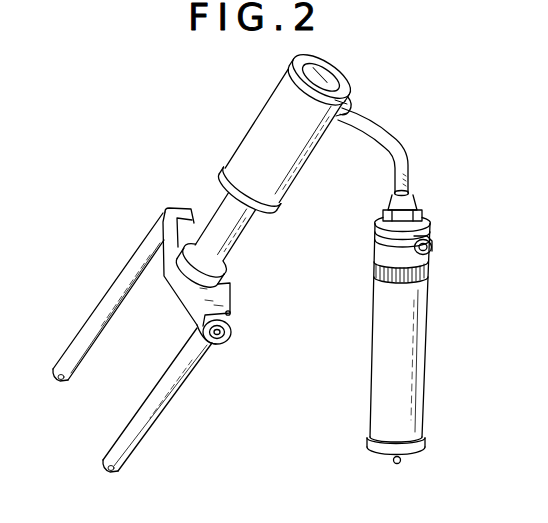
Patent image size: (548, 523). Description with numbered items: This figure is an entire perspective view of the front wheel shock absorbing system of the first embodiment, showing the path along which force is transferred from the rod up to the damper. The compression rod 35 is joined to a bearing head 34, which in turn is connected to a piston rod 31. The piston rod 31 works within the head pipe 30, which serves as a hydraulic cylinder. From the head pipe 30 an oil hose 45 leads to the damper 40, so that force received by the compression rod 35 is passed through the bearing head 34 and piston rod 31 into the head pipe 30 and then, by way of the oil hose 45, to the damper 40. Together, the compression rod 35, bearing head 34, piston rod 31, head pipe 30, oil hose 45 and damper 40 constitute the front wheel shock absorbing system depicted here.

The head pipe 30 is at (257, 143).
The piston rod 31 is at (243, 237).
The bearing head 34 is at (226, 300).
The compression rod 35 is at (93, 328).
The damper 40 is at (428, 346).
The oil hose 45 is at (400, 158).